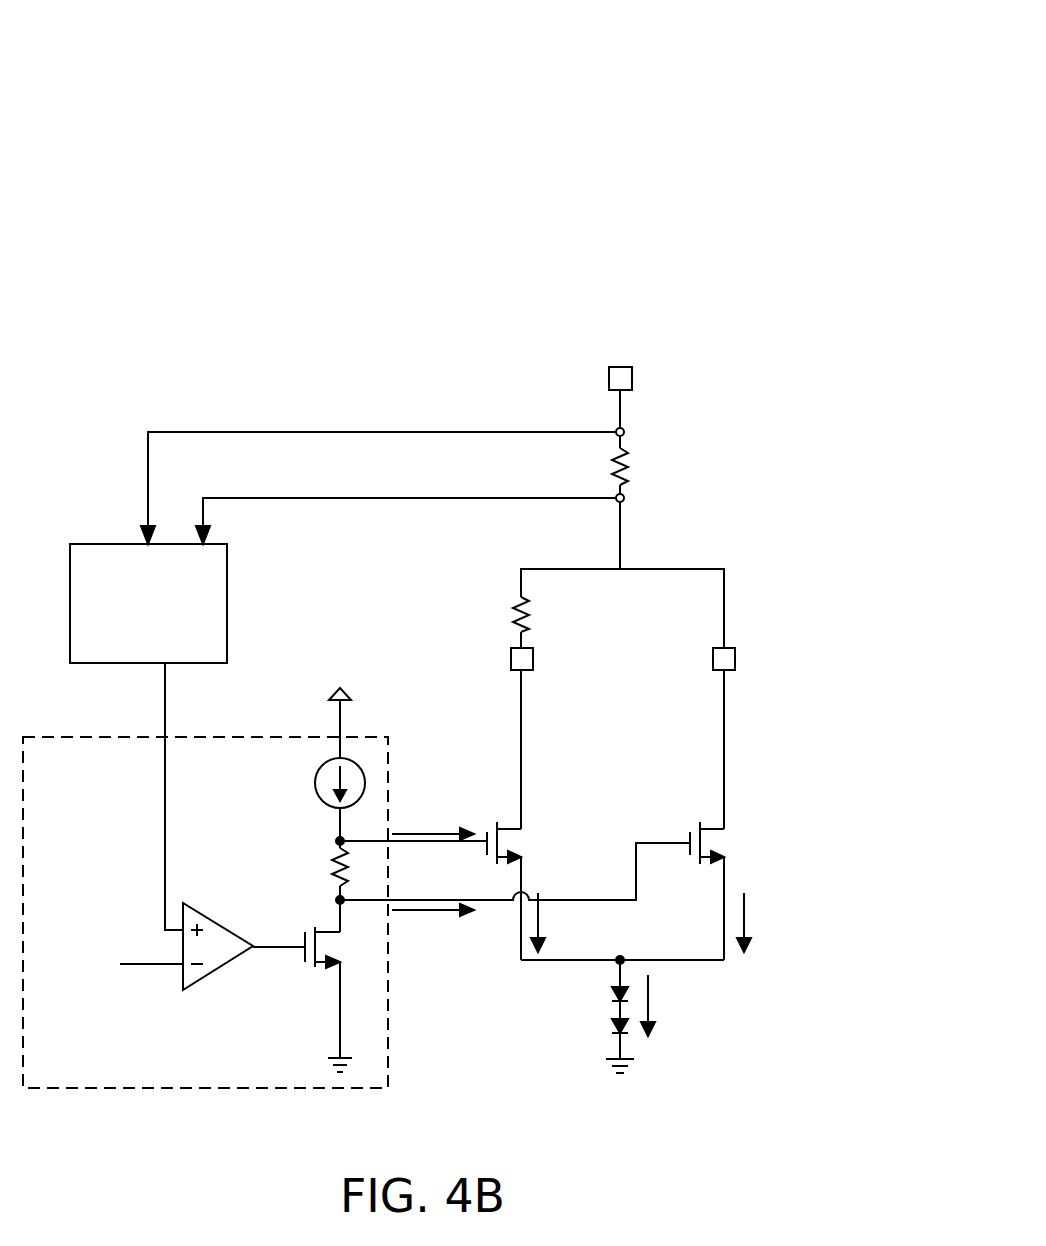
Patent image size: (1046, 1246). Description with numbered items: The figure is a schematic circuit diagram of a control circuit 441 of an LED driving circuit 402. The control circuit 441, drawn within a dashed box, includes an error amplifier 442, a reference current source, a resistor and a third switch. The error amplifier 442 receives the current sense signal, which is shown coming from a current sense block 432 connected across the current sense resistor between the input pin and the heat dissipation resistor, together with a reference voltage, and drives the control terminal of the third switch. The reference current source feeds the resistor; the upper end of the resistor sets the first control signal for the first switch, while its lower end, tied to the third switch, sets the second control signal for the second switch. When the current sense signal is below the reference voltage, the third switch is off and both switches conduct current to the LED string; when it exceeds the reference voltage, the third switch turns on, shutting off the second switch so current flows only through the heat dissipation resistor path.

The LED driving circuit 402 is at (921, 30).
The current sense circuit 432 is at (100, 663).
The control circuit 441 is at (205, 922).
The error amplifier 442 is at (183, 990).